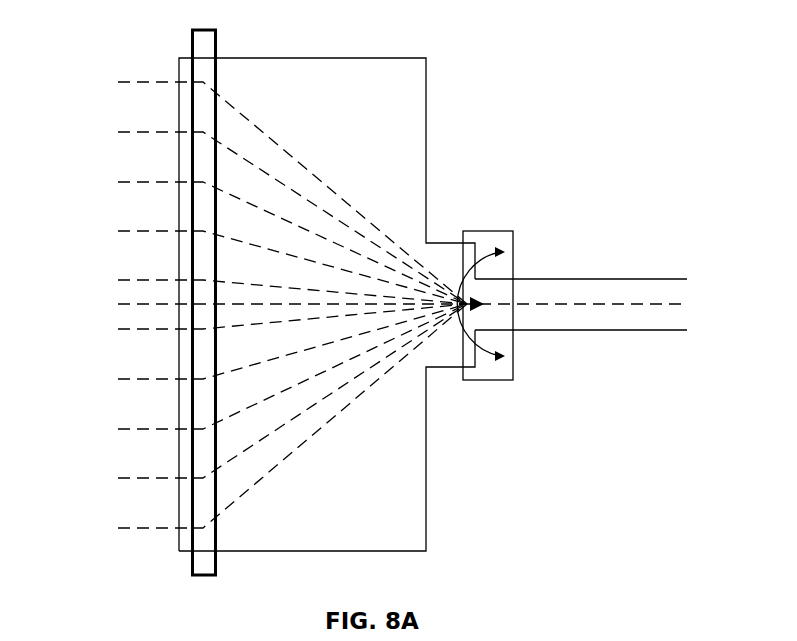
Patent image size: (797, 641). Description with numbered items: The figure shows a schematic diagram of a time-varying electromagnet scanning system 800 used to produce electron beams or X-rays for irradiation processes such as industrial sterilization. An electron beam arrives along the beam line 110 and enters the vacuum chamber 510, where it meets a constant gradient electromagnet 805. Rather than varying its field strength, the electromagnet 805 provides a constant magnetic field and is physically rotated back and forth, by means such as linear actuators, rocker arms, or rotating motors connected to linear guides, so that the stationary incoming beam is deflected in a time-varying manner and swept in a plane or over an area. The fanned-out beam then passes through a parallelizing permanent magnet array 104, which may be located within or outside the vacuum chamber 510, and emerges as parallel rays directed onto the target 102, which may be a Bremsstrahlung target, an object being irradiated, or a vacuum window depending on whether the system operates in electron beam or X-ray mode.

The time-varying electromagnet scanning system 800 is at (658, 66).
The vacuum chamber 510 is at (425, 93).
The beam line 110 is at (660, 303).
The parallelizing permanent magnet array 104 is at (217, 43).
The target 102 is at (178, 124).
The constant gradient electromagnet 805 is at (500, 227).